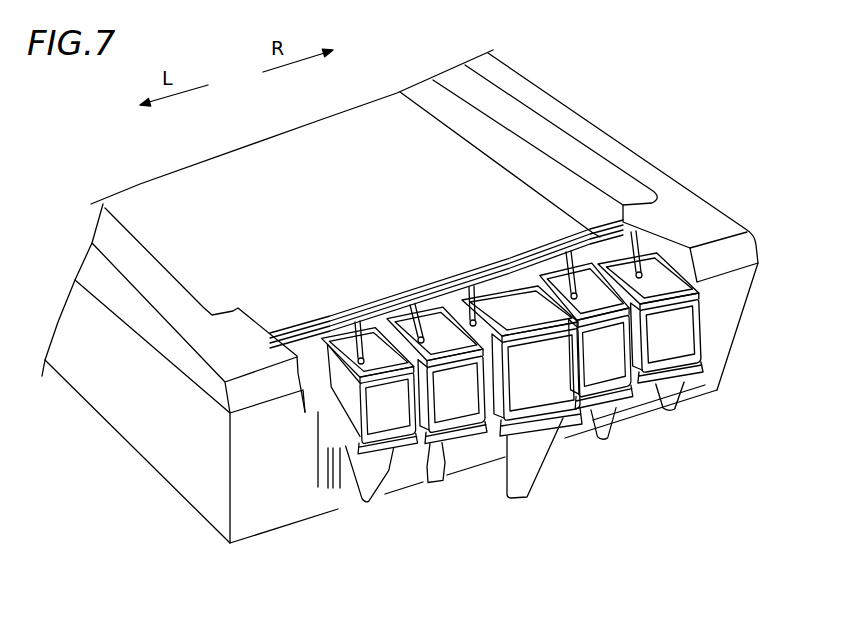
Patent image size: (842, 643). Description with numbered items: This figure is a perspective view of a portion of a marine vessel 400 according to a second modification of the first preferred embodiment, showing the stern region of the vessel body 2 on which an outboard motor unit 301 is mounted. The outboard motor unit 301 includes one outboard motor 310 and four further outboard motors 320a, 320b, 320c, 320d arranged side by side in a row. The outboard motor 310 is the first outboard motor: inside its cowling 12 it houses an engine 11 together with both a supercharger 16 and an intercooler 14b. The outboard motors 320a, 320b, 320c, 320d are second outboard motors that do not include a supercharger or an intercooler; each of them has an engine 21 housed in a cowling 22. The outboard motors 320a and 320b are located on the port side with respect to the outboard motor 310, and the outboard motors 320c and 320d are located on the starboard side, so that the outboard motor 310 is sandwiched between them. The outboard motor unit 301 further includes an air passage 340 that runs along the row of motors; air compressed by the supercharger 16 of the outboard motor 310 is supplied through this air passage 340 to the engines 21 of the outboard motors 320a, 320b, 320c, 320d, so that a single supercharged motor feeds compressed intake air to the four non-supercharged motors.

The vessel body 2 is at (417, 327).
The marine vessel 400 is at (636, 128).
The outboard motor unit 301 is at (455, 408).
The outboard motor 310 is at (555, 414).
The engine 11 is at (572, 459).
The cowling 12 is at (569, 396).
The outboard motor 320a is at (444, 458).
The outboard motor 320b is at (418, 477).
The outboard motor 320c is at (640, 430).
The outboard motor 320d is at (667, 382).
The engine 21 is at (350, 455).
The cowling 22 is at (345, 423).
The air passage 340 is at (330, 313).
The intercooler 14b is at (447, 276).
The supercharger 16 is at (480, 268).